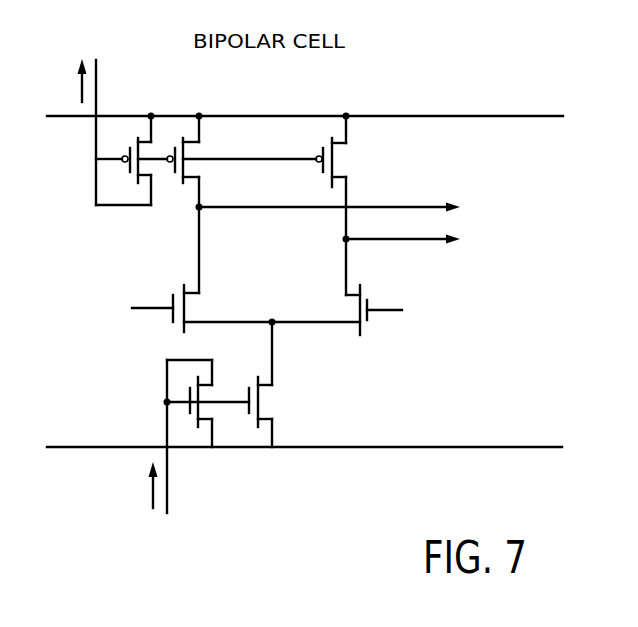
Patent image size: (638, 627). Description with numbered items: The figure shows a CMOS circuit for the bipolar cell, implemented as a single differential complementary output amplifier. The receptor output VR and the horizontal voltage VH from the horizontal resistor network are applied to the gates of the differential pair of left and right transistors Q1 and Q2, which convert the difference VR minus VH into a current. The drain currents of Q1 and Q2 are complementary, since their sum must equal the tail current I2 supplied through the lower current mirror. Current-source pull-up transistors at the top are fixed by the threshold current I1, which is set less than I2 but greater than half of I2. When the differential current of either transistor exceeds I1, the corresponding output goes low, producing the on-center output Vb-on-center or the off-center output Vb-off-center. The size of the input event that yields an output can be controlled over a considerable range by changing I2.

The threshold current I1 is at (108, 81).
The differential pair tail current I2 is at (177, 436).
The left transistor of differential pair Q1 is at (266, 308).
The right transistor of differential pair Q2 is at (344, 310).
The receptor output VR is at (151, 294).
The horizontal voltage VH is at (384, 295).
The on-center output Vb-on-center is at (379, 203).
The off-center output Vb-off-center is at (453, 234).